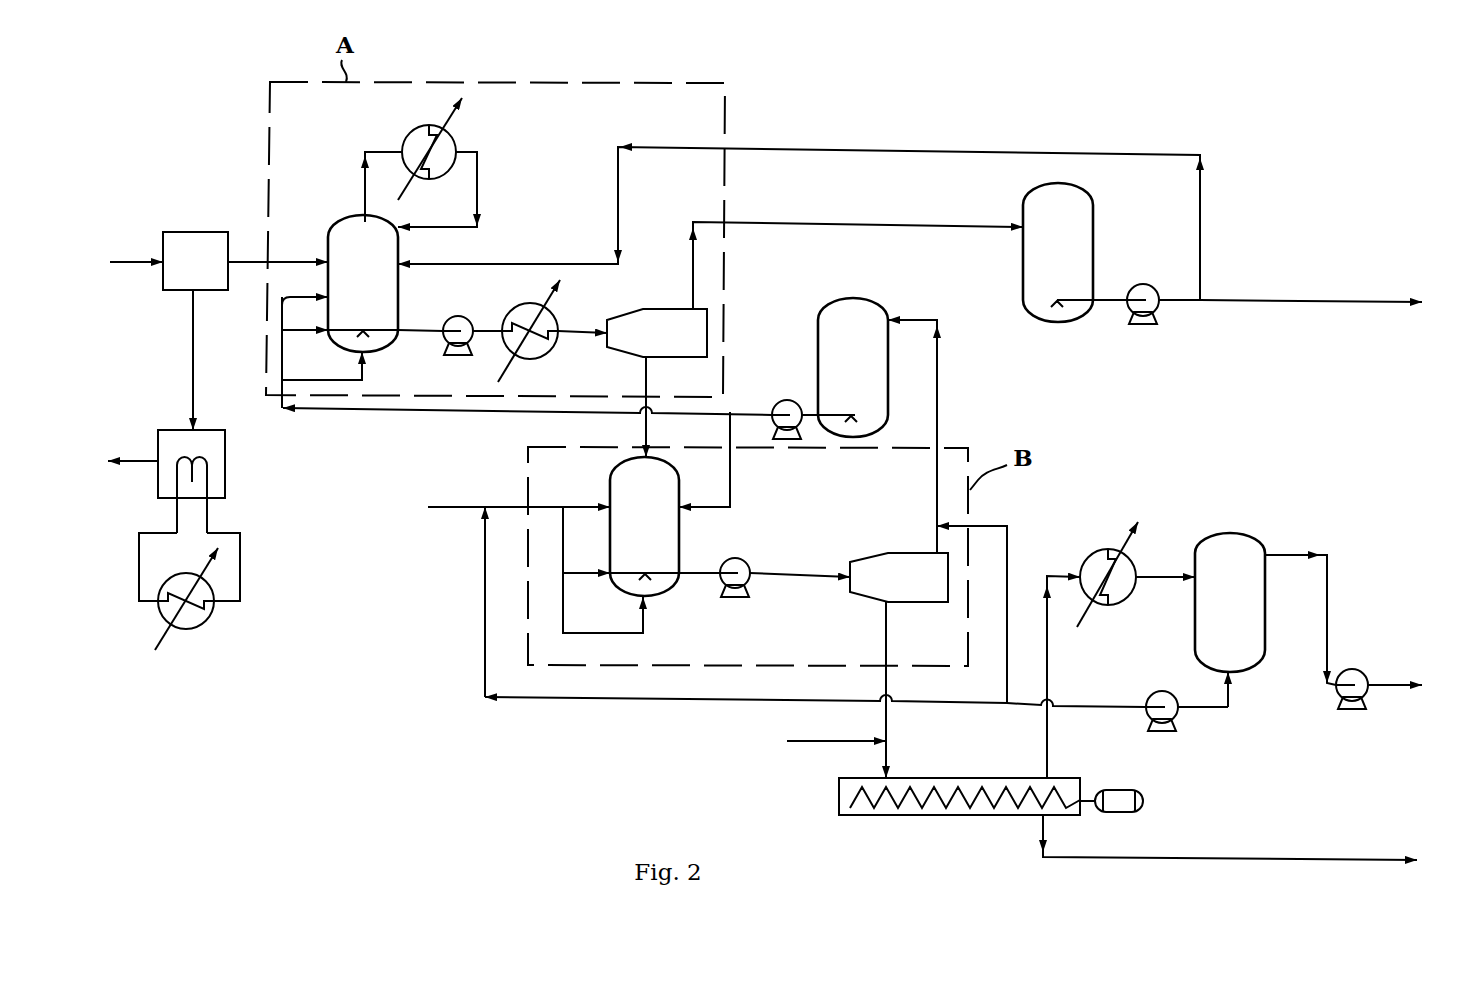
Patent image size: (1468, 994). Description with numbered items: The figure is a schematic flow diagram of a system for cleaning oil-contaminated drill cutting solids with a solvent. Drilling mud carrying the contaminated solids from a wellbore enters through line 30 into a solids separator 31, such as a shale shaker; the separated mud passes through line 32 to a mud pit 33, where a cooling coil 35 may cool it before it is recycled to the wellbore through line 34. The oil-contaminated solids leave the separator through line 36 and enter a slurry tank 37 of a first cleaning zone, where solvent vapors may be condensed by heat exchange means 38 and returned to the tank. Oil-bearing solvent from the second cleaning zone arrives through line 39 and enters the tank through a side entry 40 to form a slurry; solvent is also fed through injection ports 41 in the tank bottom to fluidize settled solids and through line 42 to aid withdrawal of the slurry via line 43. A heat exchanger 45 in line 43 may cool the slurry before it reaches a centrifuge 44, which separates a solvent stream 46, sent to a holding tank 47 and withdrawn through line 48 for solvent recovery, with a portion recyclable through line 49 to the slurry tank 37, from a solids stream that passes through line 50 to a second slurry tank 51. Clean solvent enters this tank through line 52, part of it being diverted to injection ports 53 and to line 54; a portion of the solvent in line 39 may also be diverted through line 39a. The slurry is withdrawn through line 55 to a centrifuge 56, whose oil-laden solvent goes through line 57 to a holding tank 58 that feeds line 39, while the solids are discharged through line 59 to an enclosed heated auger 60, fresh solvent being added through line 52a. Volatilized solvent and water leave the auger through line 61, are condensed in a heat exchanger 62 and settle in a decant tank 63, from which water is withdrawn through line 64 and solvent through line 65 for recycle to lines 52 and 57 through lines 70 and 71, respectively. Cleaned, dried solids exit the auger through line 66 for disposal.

The line 30 is at (122, 263).
The solids separator 31 is at (210, 232).
The line 32 is at (191, 331).
The mud pit 33 is at (228, 461).
The line 34 is at (140, 463).
The cooling coil 35 is at (208, 510).
The line 36 is at (283, 262).
The slurry tank 37 is at (346, 218).
The heat exchange means 38 is at (457, 138).
The line 39 is at (417, 410).
The line 39a is at (732, 476).
The side entry 40 is at (268, 306).
The injection ports 41 is at (365, 356).
The line 42 is at (274, 340).
The line 43 is at (582, 330).
The centrifuge 44 is at (666, 308).
The heat exchanger 45 is at (500, 314).
The solvent stream 46 is at (693, 256).
The holding tank 47 is at (1055, 324).
The line 48 is at (1222, 305).
The line 49 is at (883, 148).
The line 50 is at (647, 388).
The slurry tank 51 is at (609, 492).
The line 52 is at (445, 509).
The line 52a is at (796, 744).
The injection ports 53 is at (646, 598).
The line 54 is at (585, 575).
The line 55 is at (781, 576).
The centrifuge 56 is at (850, 594).
The line 57 is at (940, 383).
The holding tank 58 is at (822, 312).
The line 59 is at (889, 628).
The enclosed heated auger 60 is at (984, 778).
The line 61 is at (1048, 654).
The heat exchanger 62 is at (1106, 549).
The decant tank 63 is at (1230, 533).
The line 64 is at (1328, 584).
The line 65 is at (1229, 684).
The line 66 is at (1187, 857).
The line 70 is at (586, 700).
The line 71 is at (1007, 526).